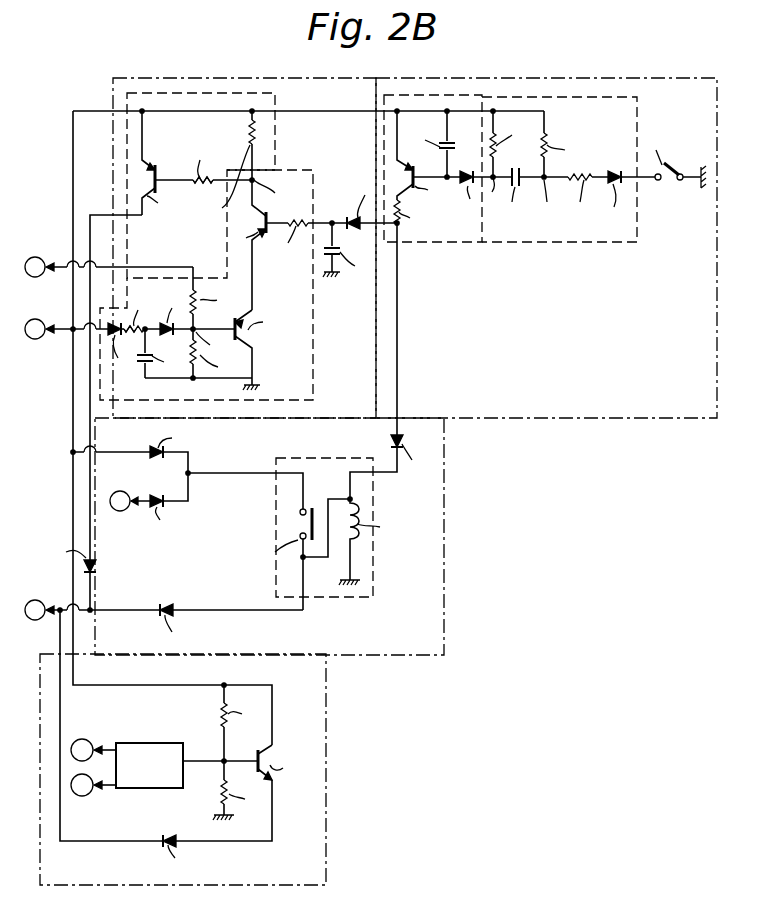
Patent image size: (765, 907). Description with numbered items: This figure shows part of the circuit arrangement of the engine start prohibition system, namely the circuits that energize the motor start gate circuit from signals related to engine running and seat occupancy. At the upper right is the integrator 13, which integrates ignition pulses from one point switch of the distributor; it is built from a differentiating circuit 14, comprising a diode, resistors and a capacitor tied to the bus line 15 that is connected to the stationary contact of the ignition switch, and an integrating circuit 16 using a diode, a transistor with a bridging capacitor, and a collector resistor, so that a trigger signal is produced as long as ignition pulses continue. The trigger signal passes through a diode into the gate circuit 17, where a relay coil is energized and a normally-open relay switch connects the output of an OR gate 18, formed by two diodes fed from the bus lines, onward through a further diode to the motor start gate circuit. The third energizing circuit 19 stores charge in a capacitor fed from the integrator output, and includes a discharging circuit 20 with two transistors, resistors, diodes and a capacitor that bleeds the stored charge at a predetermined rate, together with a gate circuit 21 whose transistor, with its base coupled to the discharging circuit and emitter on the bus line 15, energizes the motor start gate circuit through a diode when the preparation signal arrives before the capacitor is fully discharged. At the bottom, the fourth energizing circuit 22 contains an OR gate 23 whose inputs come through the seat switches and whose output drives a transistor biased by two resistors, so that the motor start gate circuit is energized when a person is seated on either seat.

The integrator 13 is at (575, 80).
The differentiating circuit 14 is at (540, 242).
The bus line 15 is at (305, 111).
The integrating circuit 16 is at (450, 243).
The gate circuit 17 is at (445, 530).
The OR gate 18 is at (197, 505).
The third energizing circuit 19 is at (256, 78).
The discharging circuit 20 is at (313, 330).
The gate circuit 21 is at (190, 93).
The fourth energizing circuit 22 is at (326, 855).
The OR gate 23 is at (153, 743).